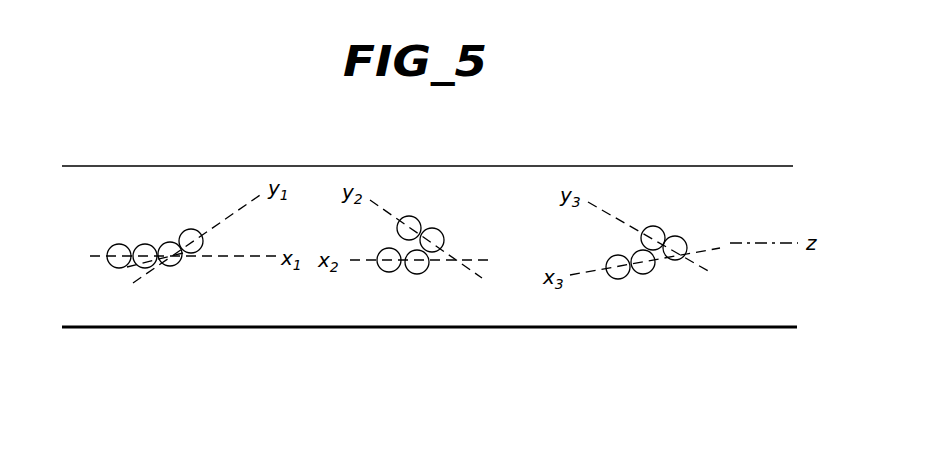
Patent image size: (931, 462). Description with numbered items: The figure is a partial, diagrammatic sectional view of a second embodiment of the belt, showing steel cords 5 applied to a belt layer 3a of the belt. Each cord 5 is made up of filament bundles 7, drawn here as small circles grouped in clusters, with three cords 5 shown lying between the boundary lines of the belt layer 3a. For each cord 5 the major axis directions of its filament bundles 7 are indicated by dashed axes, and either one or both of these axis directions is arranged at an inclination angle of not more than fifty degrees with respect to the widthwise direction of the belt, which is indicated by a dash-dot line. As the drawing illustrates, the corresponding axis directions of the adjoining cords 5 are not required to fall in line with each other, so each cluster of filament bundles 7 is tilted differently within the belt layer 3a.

The belt layer 3a is at (645, 167).
The steel cord 5 is at (158, 281).
The filament bundle 7 is at (137, 243).